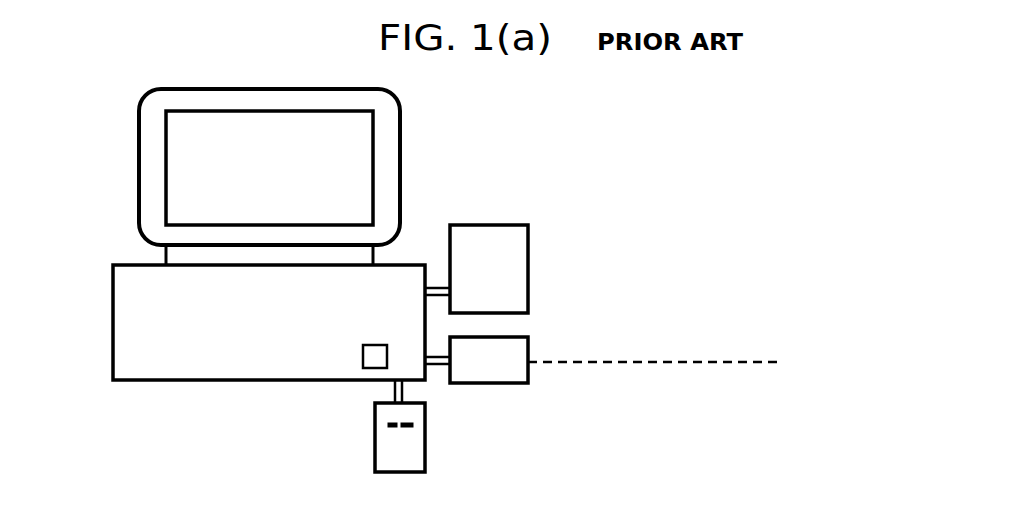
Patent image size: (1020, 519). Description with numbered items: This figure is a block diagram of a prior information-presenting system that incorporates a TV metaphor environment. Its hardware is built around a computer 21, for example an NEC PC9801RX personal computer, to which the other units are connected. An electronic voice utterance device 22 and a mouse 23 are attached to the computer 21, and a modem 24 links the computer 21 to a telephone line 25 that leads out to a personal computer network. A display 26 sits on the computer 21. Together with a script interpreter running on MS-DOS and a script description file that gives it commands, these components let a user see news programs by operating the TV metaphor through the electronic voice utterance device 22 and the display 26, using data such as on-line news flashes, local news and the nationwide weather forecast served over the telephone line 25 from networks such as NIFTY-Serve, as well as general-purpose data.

The computer 21 is at (113, 335).
The electronic voice utterance device 22 is at (528, 271).
The mouse 23 is at (375, 450).
The modem 24 is at (490, 384).
The telephone line 25 is at (575, 364).
The display 26 is at (138, 168).